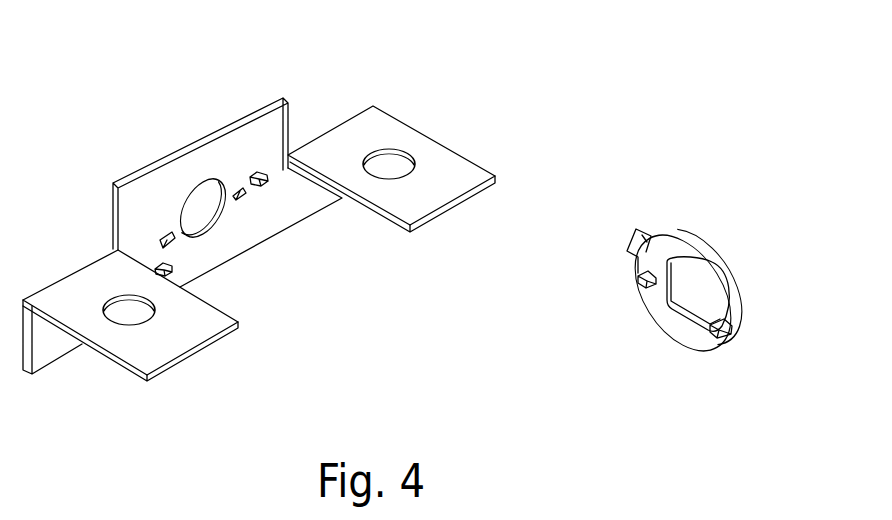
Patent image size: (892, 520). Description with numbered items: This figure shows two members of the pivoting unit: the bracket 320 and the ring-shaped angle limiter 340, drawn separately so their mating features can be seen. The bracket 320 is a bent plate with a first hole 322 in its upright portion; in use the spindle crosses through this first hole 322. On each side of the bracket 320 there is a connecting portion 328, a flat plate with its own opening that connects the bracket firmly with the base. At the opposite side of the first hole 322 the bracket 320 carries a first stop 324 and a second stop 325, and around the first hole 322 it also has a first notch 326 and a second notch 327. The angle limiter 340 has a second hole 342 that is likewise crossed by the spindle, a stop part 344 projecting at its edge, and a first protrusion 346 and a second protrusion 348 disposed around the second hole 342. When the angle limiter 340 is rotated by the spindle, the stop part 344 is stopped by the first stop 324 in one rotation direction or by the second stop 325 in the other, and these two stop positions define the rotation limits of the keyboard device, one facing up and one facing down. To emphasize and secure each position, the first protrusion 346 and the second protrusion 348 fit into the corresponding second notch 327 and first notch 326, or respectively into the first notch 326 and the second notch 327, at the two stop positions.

The bracket 320 is at (52, 48).
The first hole 322 is at (210, 192).
The first stop 324 is at (264, 177).
The second stop 325 is at (172, 269).
The first notch 326 is at (246, 196).
The second notch 327 is at (165, 236).
The connecting portion 328 is at (177, 338).
The angle limiter 340 is at (630, 104).
The second hole 342 is at (690, 285).
The stop part 344 is at (645, 228).
The first protrusion 346 is at (725, 333).
The second protrusion 348 is at (640, 283).